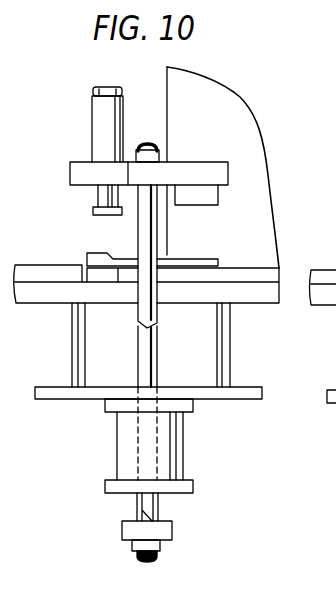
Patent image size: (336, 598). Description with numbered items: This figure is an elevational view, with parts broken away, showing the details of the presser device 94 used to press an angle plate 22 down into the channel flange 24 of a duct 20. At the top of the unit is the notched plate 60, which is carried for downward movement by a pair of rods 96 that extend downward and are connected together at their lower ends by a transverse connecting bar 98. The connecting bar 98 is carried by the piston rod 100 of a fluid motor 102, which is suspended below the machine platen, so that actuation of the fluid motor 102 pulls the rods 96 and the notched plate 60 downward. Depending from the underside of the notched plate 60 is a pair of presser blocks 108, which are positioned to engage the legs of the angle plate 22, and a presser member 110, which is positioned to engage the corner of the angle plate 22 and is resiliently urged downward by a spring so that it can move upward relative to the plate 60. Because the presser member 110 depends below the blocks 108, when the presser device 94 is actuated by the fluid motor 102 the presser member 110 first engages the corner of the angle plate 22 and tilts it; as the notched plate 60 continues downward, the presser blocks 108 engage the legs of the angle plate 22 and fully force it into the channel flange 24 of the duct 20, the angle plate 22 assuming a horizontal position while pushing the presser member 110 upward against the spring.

The duct 20 is at (224, 110).
The notched plate 60 is at (80, 168).
The presser device 94 is at (66, 190).
The presser member 110 is at (93, 212).
The presser block 108 is at (196, 198).
The rod 96 is at (148, 352).
The angle plate 22 is at (226, 260).
The channel flange 24 is at (281, 272).
The fluid motor 102 is at (185, 452).
The piston rod 100 is at (137, 502).
The transverse connecting bar 98 is at (172, 531).